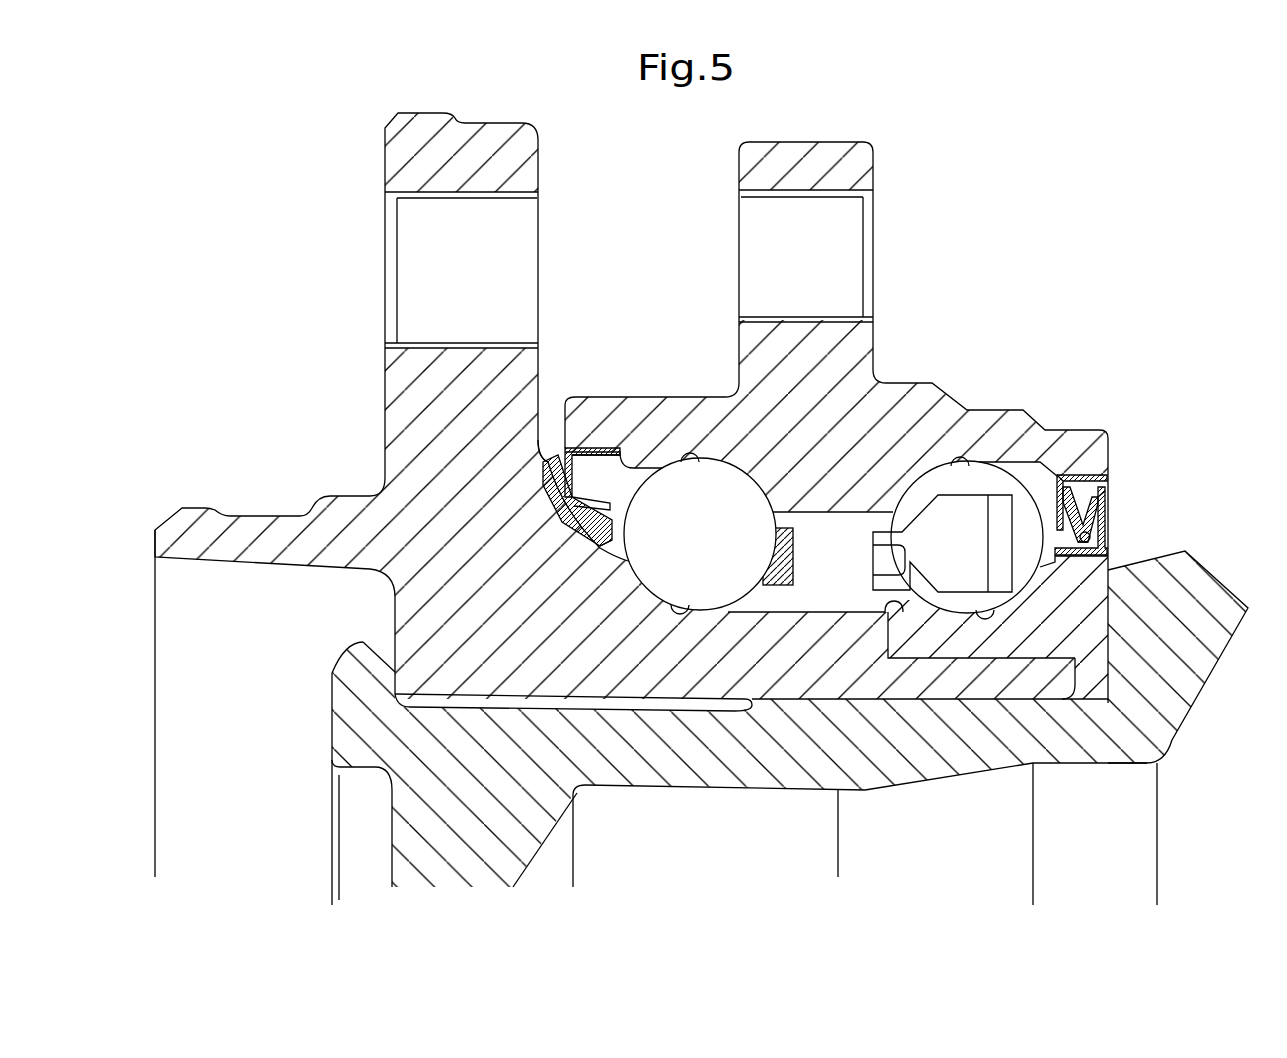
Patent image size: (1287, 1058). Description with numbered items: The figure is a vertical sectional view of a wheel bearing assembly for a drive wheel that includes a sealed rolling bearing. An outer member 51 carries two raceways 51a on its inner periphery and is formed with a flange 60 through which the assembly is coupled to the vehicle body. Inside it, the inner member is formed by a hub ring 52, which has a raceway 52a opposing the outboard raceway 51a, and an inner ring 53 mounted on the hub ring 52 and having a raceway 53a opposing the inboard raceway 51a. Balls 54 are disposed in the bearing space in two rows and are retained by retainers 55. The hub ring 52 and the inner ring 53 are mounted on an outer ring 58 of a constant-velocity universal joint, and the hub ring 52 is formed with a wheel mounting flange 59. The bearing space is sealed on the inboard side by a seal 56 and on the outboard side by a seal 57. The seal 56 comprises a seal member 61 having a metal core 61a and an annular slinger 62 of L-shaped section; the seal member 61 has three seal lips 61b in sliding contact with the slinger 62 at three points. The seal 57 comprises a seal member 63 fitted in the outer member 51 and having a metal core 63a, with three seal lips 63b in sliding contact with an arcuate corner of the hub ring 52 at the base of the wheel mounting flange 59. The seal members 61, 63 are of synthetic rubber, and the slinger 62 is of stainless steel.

The outer member 51 is at (735, 402).
The raceways 51a is at (690, 458).
The hub ring 52 is at (360, 528).
The raceway 52a is at (680, 595).
The inner ring 53 is at (1052, 645).
The raceway 53a is at (985, 625).
The balls 54 is at (728, 595).
The retainers 55 is at (878, 595).
The seal 56 is at (1107, 492).
The seal 57 is at (557, 458).
The outer ring 58 is at (1157, 690).
The wheel mounting flange 59 is at (465, 155).
The flange 60 is at (820, 160).
The seal member 61 is at (1077, 477).
The metal core 61a is at (1040, 470).
The seal lips 61b is at (1095, 548).
The slinger 62 is at (1108, 491).
The seal member 63 is at (568, 450).
The metal core 63a is at (607, 447).
The seal lips 63b is at (608, 598).